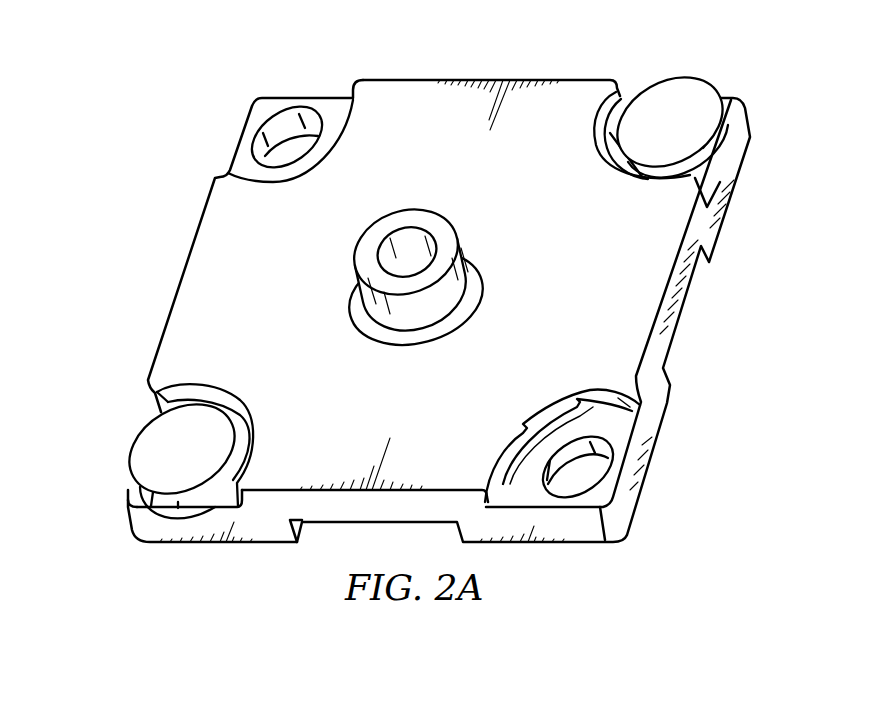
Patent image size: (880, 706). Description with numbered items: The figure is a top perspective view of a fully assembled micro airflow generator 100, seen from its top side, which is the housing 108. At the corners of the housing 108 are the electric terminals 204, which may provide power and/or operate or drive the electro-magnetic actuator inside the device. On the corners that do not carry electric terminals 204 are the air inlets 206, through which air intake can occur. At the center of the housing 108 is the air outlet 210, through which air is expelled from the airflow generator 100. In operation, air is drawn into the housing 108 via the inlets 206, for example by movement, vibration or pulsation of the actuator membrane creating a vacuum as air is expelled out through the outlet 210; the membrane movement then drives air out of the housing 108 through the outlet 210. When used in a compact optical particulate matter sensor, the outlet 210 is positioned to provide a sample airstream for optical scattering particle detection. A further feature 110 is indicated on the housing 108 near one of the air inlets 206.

The micro airflow generator 100 is at (222, 26).
The housing 108 is at (222, 258).
The notch 110 is at (570, 414).
The electric terminals 204 is at (694, 90).
The air inlet 206 is at (318, 158).
The air outlet 210 is at (414, 253).